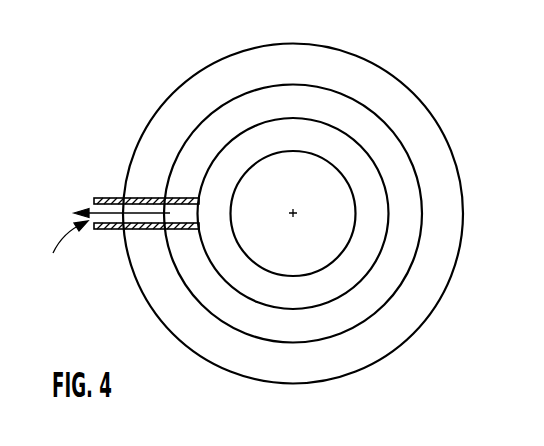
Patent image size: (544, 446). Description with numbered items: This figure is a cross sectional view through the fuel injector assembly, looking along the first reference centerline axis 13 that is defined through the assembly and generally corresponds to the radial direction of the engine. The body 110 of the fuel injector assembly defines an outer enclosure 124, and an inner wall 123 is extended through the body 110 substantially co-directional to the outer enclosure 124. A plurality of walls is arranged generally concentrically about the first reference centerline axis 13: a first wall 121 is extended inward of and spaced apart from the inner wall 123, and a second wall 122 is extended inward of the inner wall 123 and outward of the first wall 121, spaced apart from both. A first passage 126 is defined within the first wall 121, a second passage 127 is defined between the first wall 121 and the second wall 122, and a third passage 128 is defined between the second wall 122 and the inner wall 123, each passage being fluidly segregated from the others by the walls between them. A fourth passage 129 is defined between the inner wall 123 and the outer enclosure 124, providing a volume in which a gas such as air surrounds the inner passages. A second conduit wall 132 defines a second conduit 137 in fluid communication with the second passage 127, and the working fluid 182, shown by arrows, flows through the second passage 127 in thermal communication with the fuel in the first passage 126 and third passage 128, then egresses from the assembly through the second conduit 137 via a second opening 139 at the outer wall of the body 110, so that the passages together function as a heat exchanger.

The body 110 is at (397, 77).
The third passage 128 is at (318, 105).
The second passage 127 is at (280, 135).
The first wall 121 is at (246, 251).
The second wall 122 is at (248, 297).
The first passage 126 is at (293, 196).
The fourth passage 129 is at (291, 364).
The first reference centerline axis 13 is at (294, 216).
The outer enclosure 124 is at (488, 88).
The inner wall 123 is at (474, 145).
The working fluid 182 is at (111, 198).
The second conduit wall 132 is at (107, 231).
The second conduit 137 is at (102, 212).
The second opening 139 is at (63, 252).